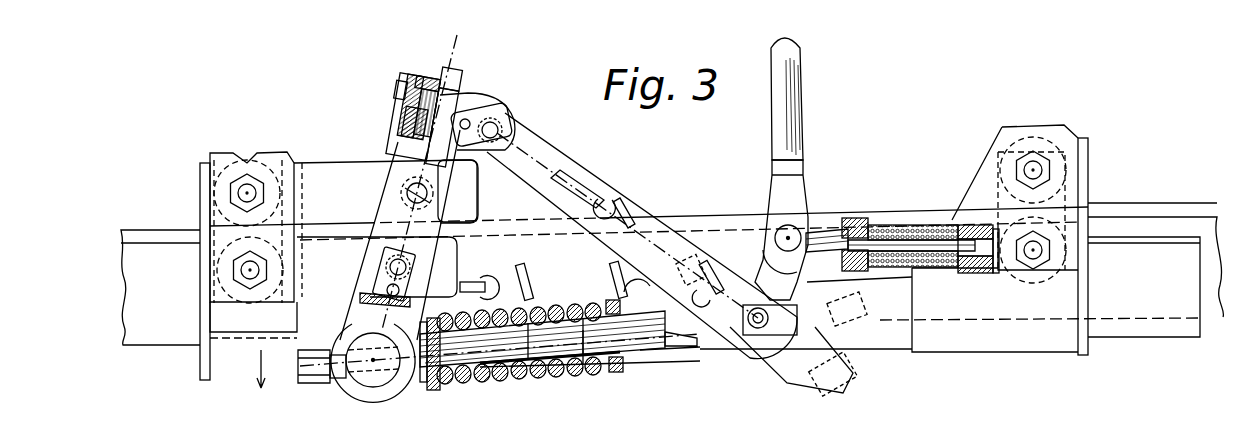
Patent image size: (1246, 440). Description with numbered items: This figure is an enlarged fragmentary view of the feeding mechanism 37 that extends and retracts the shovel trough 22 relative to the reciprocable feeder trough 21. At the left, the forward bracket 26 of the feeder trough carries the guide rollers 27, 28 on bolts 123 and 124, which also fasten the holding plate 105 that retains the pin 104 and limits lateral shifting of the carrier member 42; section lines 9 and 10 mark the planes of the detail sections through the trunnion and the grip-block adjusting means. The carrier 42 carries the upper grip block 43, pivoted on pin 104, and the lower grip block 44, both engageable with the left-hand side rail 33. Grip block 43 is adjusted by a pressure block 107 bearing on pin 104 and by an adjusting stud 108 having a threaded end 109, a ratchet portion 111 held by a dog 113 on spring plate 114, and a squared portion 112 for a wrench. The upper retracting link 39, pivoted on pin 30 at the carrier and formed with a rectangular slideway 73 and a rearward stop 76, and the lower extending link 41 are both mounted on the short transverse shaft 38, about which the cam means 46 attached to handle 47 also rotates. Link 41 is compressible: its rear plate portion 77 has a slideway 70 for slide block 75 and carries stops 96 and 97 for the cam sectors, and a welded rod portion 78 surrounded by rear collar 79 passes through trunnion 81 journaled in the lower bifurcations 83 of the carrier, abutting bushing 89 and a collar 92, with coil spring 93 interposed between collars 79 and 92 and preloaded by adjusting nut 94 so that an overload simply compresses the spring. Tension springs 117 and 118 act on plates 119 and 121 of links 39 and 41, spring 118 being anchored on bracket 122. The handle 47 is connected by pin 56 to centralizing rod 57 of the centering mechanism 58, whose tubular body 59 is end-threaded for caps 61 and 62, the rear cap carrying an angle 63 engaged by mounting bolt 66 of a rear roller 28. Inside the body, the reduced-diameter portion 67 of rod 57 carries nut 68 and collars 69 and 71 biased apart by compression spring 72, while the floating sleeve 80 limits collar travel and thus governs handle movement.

The section line 9 is at (416, 350).
The section line 10 is at (440, 42).
The feeder trough 21 is at (1136, 340).
The shovel trough 22 is at (158, 349).
The upstanding brackets 26 is at (212, 153).
The inner guide roller 27 is at (248, 162).
The inner guide roller 28 is at (204, 314).
The pin 30 is at (508, 125).
The side rail 33 is at (175, 226).
The feeding mechanism 37 is at (526, 102).
The transverse shaft 38 is at (757, 330).
The retracting link 39 is at (608, 182).
The extending link 41 is at (688, 335).
The carrier member 42 is at (386, 141).
The upper grip block 43 is at (472, 193).
The lower grip block 44 is at (352, 292).
The cam means 46 is at (620, 330).
The handle 47 is at (805, 88).
The pin 56 is at (775, 228).
The centralizing rod 57 is at (828, 232).
The centering mechanism 58 is at (905, 225).
The tubular body 59 is at (920, 225).
The cap 61 is at (848, 216).
The cap 62 is at (972, 225).
The angle 63 is at (996, 273).
The mounting bolt 66 is at (1042, 270).
The reduced-diameter portion 67 is at (878, 264).
The nut 68 is at (980, 273).
The collar 69 is at (858, 218).
The slideway 70 is at (708, 350).
The collar 71 is at (940, 238).
The compression spring 72 is at (942, 267).
The rectangular slideway 73 is at (790, 385).
The slide block 75 is at (722, 340).
The stop 76 is at (822, 388).
The rear plate portion 77 is at (655, 352).
The rod portion 78 is at (590, 367).
The rear collar 79 is at (614, 374).
The sleeve 80 is at (888, 225).
The trunnion 81 is at (370, 375).
The lower bifurcations 83 is at (388, 398).
The bushing 89 is at (338, 380).
The collar 92 is at (432, 393).
The coil spring 93 is at (470, 384).
The adjusting nut 94 is at (308, 384).
The stop 96 is at (688, 336).
The stop 97 is at (865, 300).
The pin 104 is at (430, 200).
The holding plate 105 is at (318, 162).
The pressure block 107 is at (412, 108).
The adjusting stud 108 is at (465, 62).
The threaded end portion 109 is at (410, 120).
The ratchet portion 111 is at (428, 78).
The squared portion 112 is at (458, 72).
The dog 113 is at (412, 80).
The spring plate 114 is at (405, 88).
The tension spring 117 is at (630, 205).
The tension spring 118 is at (528, 266).
The plate 119 is at (555, 178).
The plate 121 is at (620, 288).
The bracket 122 is at (485, 275).
The bolt 123 is at (238, 194).
The bolt 124 is at (241, 271).